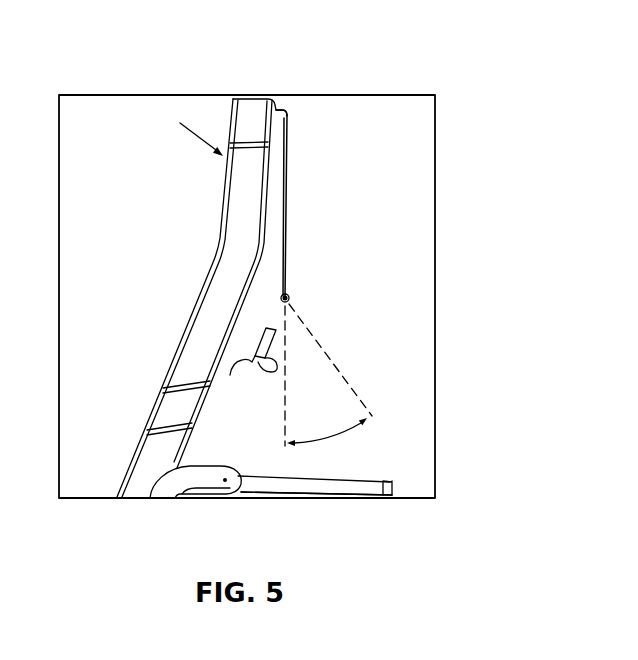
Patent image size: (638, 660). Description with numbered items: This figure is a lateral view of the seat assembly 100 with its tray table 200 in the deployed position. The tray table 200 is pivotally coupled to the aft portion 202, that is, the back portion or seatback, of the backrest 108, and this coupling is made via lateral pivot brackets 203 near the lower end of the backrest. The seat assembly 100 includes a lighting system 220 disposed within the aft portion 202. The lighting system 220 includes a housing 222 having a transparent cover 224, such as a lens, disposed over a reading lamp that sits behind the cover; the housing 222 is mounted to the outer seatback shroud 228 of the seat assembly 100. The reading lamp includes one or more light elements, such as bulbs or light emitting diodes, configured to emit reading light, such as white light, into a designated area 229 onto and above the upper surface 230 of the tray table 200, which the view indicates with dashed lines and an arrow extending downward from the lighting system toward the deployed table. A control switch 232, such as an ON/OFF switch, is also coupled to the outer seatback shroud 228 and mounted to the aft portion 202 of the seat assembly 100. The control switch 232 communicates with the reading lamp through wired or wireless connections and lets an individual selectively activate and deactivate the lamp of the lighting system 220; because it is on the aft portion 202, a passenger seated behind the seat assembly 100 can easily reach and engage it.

The seat assembly 100 is at (182, 84).
The backrest 108 is at (237, 195).
The aft portion 202 is at (279, 111).
The outer seatback shroud 228 is at (280, 183).
The housing 222 is at (286, 296).
The lighting system 220 is at (287, 297).
The transparent cover 224 is at (288, 300).
The designated area 229 is at (362, 374).
The control switch 232 is at (276, 368).
The upper surface 230 is at (382, 477).
The lateral pivot brackets 203 is at (222, 484).
The tray table 200 is at (360, 506).